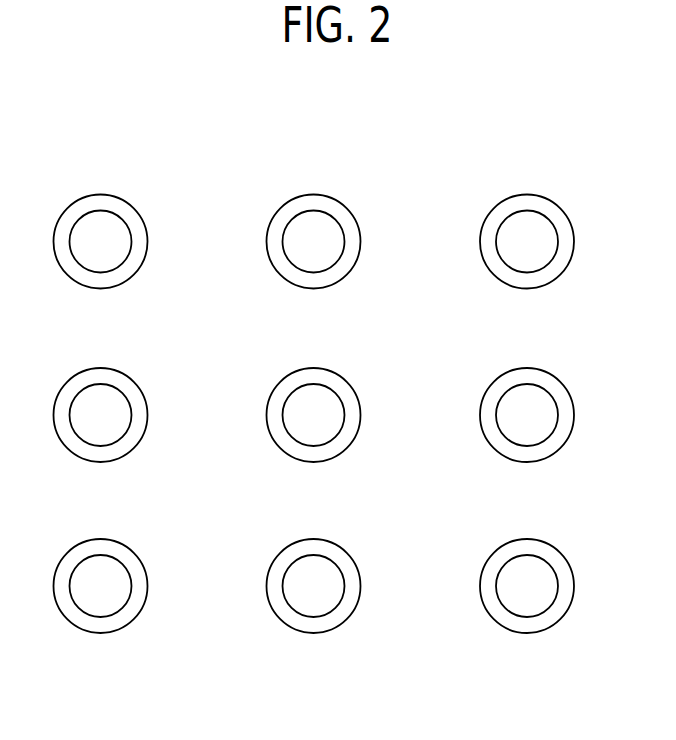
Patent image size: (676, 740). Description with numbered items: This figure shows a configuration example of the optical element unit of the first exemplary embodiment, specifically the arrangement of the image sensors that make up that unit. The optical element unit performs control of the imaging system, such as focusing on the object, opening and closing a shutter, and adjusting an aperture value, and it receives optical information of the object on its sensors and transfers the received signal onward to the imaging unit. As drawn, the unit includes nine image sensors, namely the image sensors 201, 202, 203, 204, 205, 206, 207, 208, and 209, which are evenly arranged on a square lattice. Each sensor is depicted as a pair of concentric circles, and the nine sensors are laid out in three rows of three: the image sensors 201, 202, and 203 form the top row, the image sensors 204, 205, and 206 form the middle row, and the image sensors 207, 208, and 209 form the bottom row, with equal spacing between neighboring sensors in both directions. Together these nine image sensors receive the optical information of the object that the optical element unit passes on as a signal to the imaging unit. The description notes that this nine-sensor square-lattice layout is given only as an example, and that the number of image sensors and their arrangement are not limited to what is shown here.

The image sensor 201 is at (106, 196).
The image sensor 202 is at (318, 196).
The image sensor 203 is at (532, 196).
The image sensor 204 is at (106, 370).
The image sensor 205 is at (318, 370).
The image sensor 206 is at (532, 370).
The image sensor 207 is at (106, 541).
The image sensor 208 is at (318, 541).
The image sensor 209 is at (532, 541).